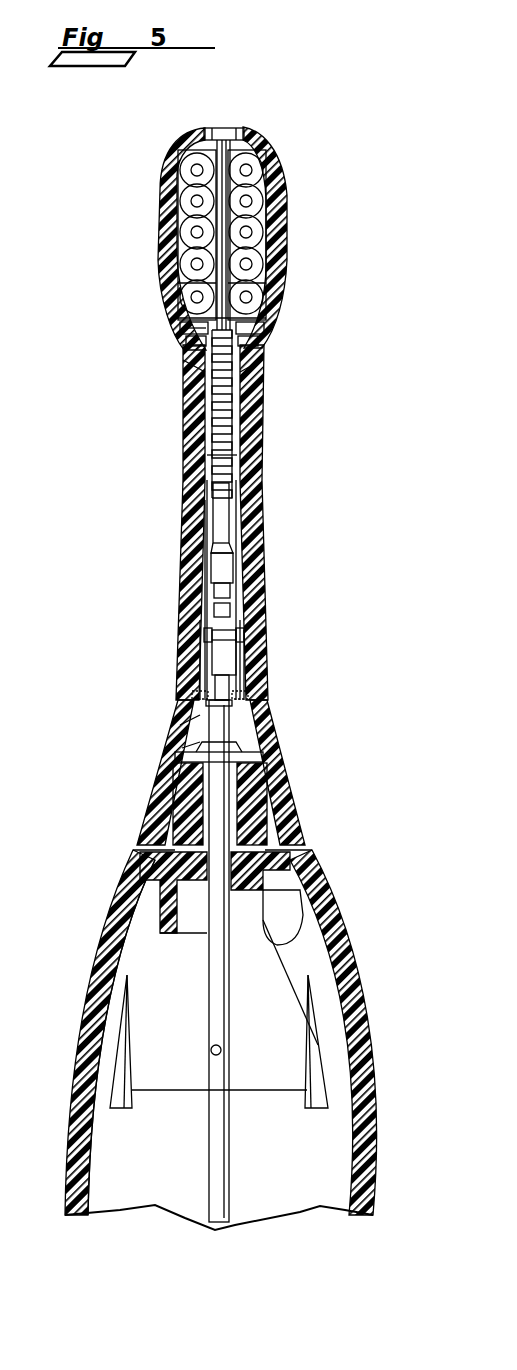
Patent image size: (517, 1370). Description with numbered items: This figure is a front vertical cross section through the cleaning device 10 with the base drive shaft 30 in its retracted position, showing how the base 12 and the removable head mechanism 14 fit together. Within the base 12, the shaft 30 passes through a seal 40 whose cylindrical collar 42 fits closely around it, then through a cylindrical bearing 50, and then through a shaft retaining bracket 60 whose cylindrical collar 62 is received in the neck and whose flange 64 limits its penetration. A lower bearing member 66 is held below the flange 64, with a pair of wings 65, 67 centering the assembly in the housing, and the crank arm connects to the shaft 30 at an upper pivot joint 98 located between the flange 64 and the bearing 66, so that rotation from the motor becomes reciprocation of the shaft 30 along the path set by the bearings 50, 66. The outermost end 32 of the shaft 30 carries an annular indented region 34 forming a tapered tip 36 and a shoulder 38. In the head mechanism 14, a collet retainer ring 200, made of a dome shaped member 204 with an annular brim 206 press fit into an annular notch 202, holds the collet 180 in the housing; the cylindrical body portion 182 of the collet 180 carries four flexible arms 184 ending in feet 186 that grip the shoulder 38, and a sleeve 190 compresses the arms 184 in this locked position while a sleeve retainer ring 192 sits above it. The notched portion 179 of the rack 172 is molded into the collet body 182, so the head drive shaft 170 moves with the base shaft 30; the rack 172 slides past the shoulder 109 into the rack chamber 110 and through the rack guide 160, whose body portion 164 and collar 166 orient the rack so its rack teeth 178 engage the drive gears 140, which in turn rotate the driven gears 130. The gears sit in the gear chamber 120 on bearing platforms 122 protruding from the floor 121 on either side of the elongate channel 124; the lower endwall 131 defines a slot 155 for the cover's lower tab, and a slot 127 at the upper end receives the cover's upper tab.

The cleaning device 10 is at (108, 828).
The base 12 is at (350, 928).
The head mechanism 14 is at (340, 460).
The base drive shaft 30 is at (155, 932).
The outermost end 32 is at (238, 628).
The annular indented region 34 is at (212, 676).
The tip 36 is at (212, 652).
The shoulder 38 is at (250, 690).
The seal 40 is at (275, 790).
The cylindrical collar 42 is at (268, 778).
The cylindrical bearing 50 is at (292, 843).
The shaft retaining bracket 60 is at (258, 876).
The cylindrical collar 62 is at (232, 853).
The flange 64 is at (250, 855).
The wing 65 is at (160, 935).
The lower bearing member 66 is at (262, 1090).
The wing 67 is at (283, 1040).
The upper pivot joint 98 is at (292, 982).
The shoulder 109 is at (180, 507).
The rack chamber 110 is at (262, 420).
The gear chamber 120 is at (273, 217).
The floor 121 is at (193, 328).
The bearing platforms 122 is at (172, 250).
The elongate channel 124 is at (258, 125).
The slot 127 is at (223, 122).
The driven gears 130 is at (252, 190).
The lower endwall 131 is at (190, 323).
The drive gears 140 is at (262, 292).
The slot 155 is at (176, 342).
The rack guide 160 is at (250, 380).
The body portion 164 is at (183, 377).
The collar 166 is at (240, 340).
The head drive shaft 170 is at (234, 528).
The rack 172 is at (252, 456).
The rack teeth 178 is at (250, 350).
The notched portion 179 is at (211, 592).
The collet 180 is at (214, 608).
The cylindrical body portion 182 is at (214, 624).
The flexible arms 184 is at (204, 665).
The feet 186 is at (200, 690).
The sleeve 190 is at (244, 645).
The sleeve retainer ring 192 is at (258, 703).
The collet retainer ring 200 is at (185, 785).
The annular notch 202 is at (258, 745).
The dome shaped member 204 is at (198, 718).
The annular brim 206 is at (198, 744).